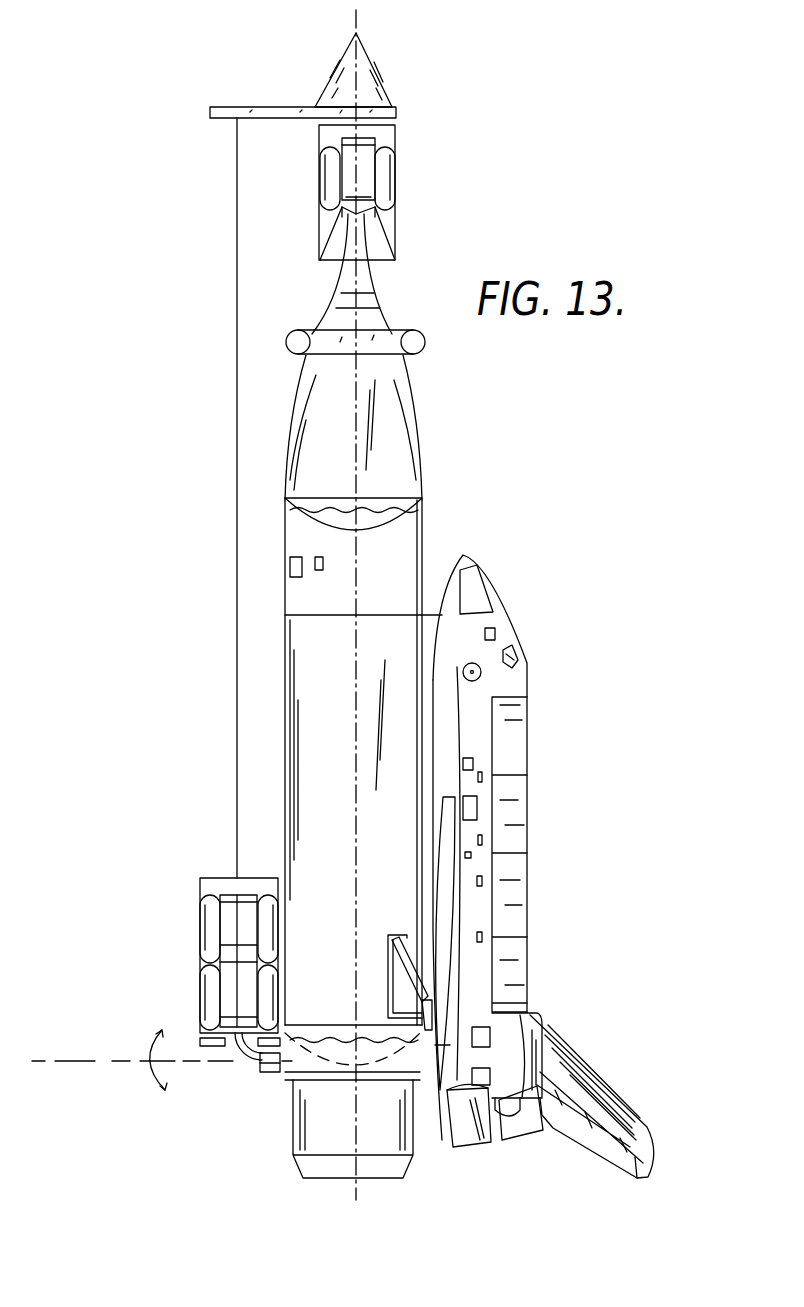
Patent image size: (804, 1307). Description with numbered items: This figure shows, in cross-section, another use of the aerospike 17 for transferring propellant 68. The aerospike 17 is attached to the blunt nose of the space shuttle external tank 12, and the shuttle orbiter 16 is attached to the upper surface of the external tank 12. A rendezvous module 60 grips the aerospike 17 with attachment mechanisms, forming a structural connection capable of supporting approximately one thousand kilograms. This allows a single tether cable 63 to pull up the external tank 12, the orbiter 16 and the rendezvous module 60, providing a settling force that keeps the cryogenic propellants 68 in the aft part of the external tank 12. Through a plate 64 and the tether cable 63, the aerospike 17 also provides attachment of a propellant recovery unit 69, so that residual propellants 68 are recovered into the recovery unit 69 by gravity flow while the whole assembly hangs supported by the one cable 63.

The external tank 12 is at (414, 454).
The orbiter 16 is at (522, 747).
The aerospike 17 is at (365, 272).
The rendezvous module 60 is at (396, 217).
The tether cable 63 is at (358, 30).
The plate 64 is at (230, 108).
The propellant 68 is at (397, 516).
The propellant recovery unit 69 is at (207, 916).